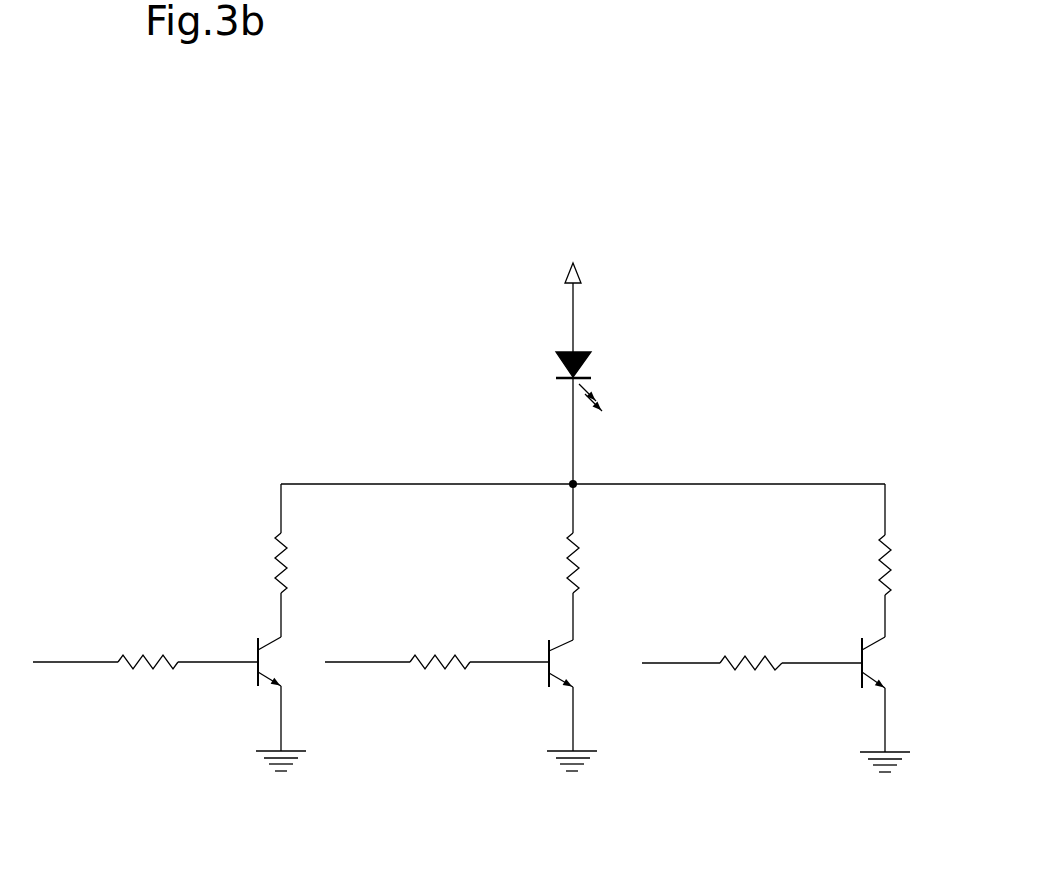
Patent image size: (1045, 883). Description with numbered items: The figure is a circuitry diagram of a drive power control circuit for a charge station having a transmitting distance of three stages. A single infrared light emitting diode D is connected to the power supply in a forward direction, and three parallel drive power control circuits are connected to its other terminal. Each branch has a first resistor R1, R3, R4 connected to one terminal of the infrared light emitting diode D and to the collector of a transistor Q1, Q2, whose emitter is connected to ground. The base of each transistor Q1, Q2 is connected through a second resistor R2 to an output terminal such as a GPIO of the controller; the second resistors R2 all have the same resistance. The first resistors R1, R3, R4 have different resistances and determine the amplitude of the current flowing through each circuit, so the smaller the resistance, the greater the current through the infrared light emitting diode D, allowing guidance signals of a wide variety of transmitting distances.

The infrared light emitting diode D is at (590, 373).
The first resistor R1 is at (299, 560).
The second resistor R2 is at (447, 644).
The first resistor R3 is at (591, 562).
The first resistor R4 is at (903, 560).
The transistor Q1 is at (268, 690).
The transistor Q2 is at (715, 690).